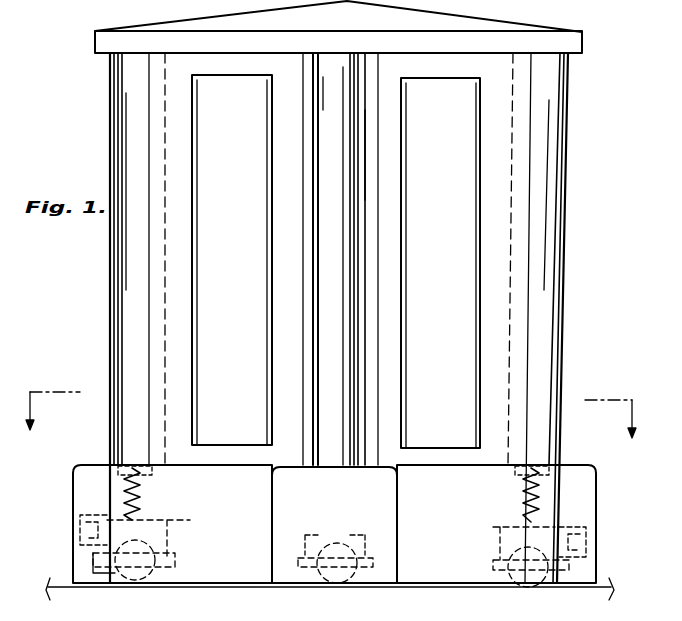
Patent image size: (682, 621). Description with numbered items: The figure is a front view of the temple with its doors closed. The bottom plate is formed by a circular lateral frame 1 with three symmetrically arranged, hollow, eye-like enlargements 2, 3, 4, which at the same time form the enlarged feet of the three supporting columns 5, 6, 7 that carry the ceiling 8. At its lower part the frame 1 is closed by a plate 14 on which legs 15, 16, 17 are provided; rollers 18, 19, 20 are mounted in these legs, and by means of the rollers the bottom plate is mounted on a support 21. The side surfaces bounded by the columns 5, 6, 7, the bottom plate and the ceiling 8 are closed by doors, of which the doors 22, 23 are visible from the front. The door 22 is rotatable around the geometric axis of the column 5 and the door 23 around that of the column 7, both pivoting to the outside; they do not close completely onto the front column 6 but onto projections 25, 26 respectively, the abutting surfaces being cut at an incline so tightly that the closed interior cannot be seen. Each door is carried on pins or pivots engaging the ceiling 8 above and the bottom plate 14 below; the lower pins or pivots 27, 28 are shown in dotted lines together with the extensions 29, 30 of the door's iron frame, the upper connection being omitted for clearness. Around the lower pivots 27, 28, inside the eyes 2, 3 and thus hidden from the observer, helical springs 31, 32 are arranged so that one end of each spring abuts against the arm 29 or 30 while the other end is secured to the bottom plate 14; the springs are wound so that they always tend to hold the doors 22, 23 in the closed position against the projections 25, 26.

The lateral frame 1 is at (110, 492).
The eye-like enlargement 2 is at (72, 545).
The eye-like enlargement 3 is at (590, 518).
The eye-like enlargement 4 is at (388, 535).
The supporting column 5 is at (113, 261).
The supporting column 6 is at (357, 272).
The supporting column 7 is at (552, 200).
The ceiling 8 is at (578, 42).
The plate 14 is at (183, 525).
The leg 15 is at (98, 577).
The leg 16 is at (575, 573).
The leg 17 is at (313, 553).
The roller 18 is at (138, 585).
The roller 19 is at (532, 586).
The roller 20 is at (341, 586).
The support 21 is at (494, 593).
The door 22 is at (232, 260).
The door 23 is at (440, 263).
The projection 25 is at (300, 140).
The projection 26 is at (372, 172).
The lower pin or pivot 27 is at (148, 503).
The lower pin or pivot 28 is at (545, 507).
The extension of the iron frame 29 is at (155, 470).
The extension of the iron frame 30 is at (515, 478).
The helical spring 31 is at (80, 514).
The helical spring 32 is at (586, 526).